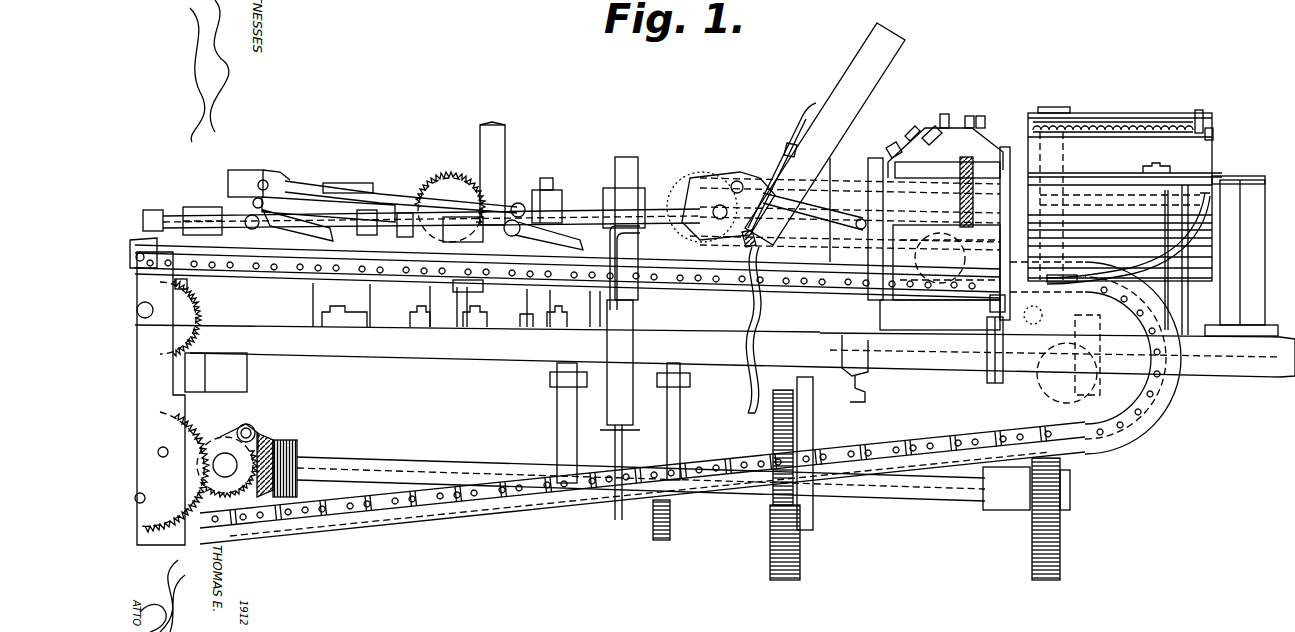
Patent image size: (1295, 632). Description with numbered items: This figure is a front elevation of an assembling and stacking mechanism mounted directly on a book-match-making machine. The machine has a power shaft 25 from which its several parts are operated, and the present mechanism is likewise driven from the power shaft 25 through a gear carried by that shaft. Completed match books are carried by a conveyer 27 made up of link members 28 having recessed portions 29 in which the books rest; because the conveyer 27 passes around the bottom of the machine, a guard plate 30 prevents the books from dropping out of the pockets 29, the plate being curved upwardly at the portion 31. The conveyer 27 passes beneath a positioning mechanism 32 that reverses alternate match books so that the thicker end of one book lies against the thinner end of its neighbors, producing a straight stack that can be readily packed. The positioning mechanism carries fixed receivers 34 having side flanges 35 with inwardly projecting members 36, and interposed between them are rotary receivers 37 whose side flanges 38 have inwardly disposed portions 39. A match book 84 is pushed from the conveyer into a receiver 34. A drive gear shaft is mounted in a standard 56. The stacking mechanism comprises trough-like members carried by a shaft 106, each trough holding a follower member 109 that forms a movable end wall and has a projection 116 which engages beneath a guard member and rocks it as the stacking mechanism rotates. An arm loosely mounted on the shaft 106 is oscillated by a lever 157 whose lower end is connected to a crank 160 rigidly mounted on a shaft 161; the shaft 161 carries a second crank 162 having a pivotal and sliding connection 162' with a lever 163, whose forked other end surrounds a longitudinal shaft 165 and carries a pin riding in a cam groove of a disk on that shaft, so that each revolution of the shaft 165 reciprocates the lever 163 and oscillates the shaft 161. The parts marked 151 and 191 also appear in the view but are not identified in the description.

The power shaft 25 is at (660, 202).
The conveyer 27 is at (480, 476).
The link members 28 is at (721, 462).
The recessed portions 29 is at (723, 498).
The guard plate 30 is at (541, 508).
The upwardly curved portion of guard plate 31 is at (1145, 305).
The positioning mechanism 32 is at (970, 127).
The receivers 34 is at (929, 128).
The side flanges 35 is at (909, 127).
The projecting members 36 is at (893, 145).
The rotary receivers 37 is at (945, 113).
The side flanges 38 is at (982, 114).
The inwardly disposed portions 39 is at (969, 115).
The standard 56 is at (745, 248).
The match book 84 is at (1108, 120).
The shaft 106 is at (1140, 118).
The follower member 109 is at (1212, 133).
The projection 116 is at (1201, 115).
The cover plate 151 is at (942, 166).
The lever 157 is at (1004, 302).
The crank 160 is at (990, 346).
The shaft 161 is at (922, 363).
The crank 162 is at (859, 363).
The pivotal and sliding connection 162' is at (863, 396).
The lever 163 is at (814, 437).
The shaft 165 is at (407, 468).
The frame plate 191 is at (1215, 181).